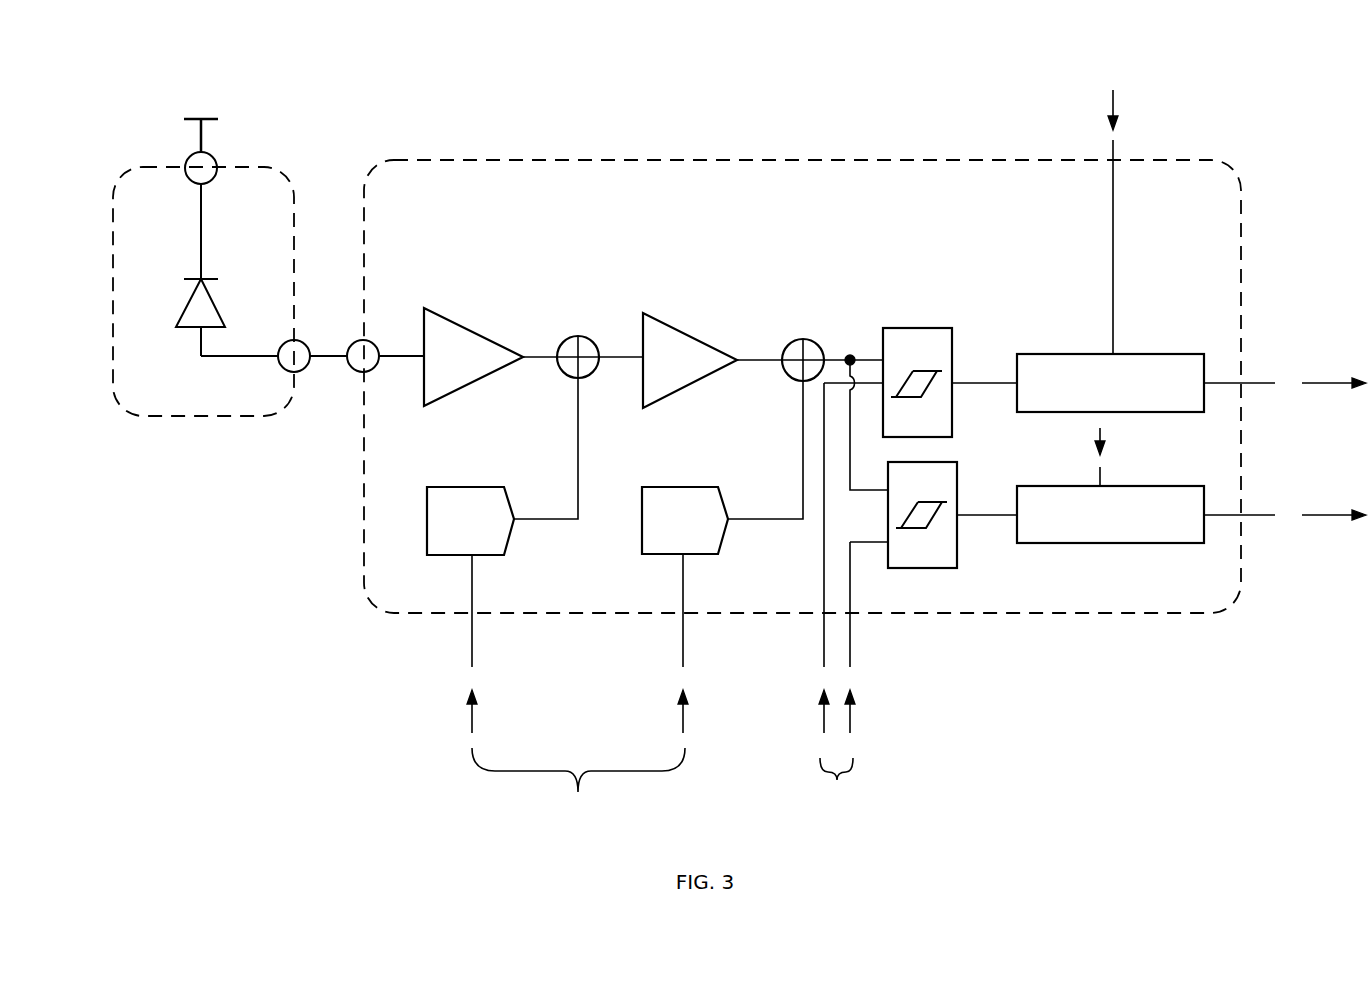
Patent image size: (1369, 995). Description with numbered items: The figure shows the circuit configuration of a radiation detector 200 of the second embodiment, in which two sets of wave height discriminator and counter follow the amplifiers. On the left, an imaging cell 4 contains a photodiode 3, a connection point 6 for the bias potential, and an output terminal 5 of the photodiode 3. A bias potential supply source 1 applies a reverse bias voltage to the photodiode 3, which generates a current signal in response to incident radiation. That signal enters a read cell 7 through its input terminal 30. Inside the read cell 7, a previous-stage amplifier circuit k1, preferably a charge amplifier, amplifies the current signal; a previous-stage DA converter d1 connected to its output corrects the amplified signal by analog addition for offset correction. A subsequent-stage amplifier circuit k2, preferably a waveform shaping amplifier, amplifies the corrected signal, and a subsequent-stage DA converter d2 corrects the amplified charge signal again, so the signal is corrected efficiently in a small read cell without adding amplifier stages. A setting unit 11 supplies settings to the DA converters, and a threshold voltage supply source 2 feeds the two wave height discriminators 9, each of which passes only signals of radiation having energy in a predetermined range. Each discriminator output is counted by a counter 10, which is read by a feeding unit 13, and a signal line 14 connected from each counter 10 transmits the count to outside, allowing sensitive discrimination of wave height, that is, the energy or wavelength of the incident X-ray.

The bias potential supply source 1 is at (197, 116).
The connection point for the bias potential 6 is at (216, 157).
The photodiode 3 is at (218, 300).
The imaging cell 4 is at (135, 412).
The output terminal of the photodiode 5 is at (298, 373).
The input terminal 30 is at (352, 342).
The read cell 7 is at (800, 158).
The radiation detector 200 is at (710, 80).
The previous-stage amplifier circuit k1 is at (470, 330).
The subsequent-stage amplifier circuit k2 is at (688, 332).
The previous-stage DA converter d1 is at (476, 487).
The subsequent-stage DA converter d2 is at (688, 487).
The setting unit 11 is at (578, 785).
The threshold voltage supply source 2 is at (853, 597).
The wave height discriminator 9 is at (955, 342).
The counter 10 is at (1128, 352).
The feeding unit 13 is at (1095, 274).
The signal line 14 is at (1285, 436).